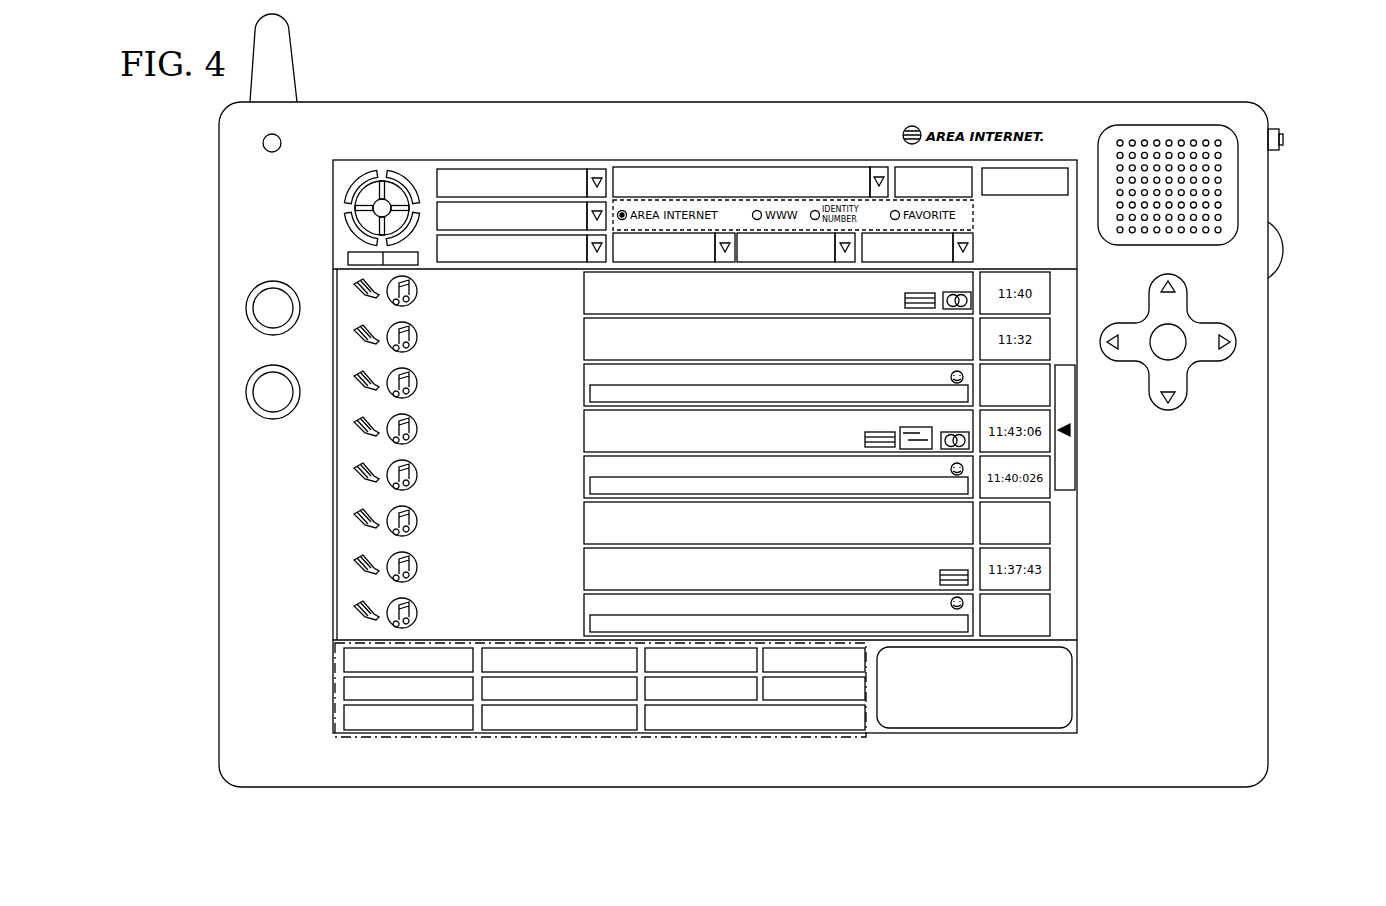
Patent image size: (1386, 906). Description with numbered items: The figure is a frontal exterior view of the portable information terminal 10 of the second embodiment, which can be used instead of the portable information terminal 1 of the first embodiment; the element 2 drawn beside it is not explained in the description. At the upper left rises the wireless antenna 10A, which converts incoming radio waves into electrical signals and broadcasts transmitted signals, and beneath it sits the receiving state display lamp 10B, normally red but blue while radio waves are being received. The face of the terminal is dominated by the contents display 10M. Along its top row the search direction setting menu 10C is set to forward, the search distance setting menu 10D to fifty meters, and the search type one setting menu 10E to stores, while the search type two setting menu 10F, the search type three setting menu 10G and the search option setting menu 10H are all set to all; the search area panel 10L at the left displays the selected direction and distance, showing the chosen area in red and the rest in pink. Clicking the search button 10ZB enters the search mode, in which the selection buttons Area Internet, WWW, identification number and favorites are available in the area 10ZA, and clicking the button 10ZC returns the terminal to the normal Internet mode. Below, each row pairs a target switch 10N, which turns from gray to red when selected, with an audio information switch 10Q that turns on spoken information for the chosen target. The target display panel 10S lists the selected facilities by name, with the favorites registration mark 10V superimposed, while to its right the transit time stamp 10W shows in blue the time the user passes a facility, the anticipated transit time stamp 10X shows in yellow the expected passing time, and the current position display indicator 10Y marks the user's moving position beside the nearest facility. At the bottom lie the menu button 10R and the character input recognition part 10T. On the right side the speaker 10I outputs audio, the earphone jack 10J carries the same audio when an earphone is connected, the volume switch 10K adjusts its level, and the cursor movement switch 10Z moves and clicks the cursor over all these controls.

The portable information terminal 1 is at (250, 308).
The second operation button 2 is at (250, 394).
The portable information terminal 10 is at (1192, 70).
The wireless antenna 10A is at (292, 33).
The receiving state display lamp 10B is at (282, 137).
The search direction setting menu 10C is at (457, 168).
The search distance setting menu 10D is at (567, 213).
The search type 1 setting menu 10E is at (563, 248).
The search type 2 setting menu 10F is at (697, 245).
The search type 3 setting menu 10G is at (822, 245).
The search option setting menu 10H is at (925, 166).
The speaker 10I is at (1178, 125).
The earphone jack 10J is at (1284, 140).
The volume switch 10K is at (1281, 258).
The search area panel 10L is at (358, 236).
The contents display 10M is at (323, 268).
The target switch 10N is at (356, 610).
The audio information switch 10Q is at (395, 622).
The menu button 10R is at (650, 740).
The target display panel 10S is at (853, 565).
The character input recognition part 10T is at (990, 700).
The favorites registration mark 10V is at (965, 600).
The transit time stamp 10W is at (1043, 532).
The anticipated transit time stamp 10X is at (1043, 392).
The current position display indicator 10Y is at (1068, 430).
The cursor movement switch 10Z is at (1207, 352).
The area 10ZA is at (975, 209).
The search button 10ZB is at (945, 245).
The button 10ZC is at (1068, 182).